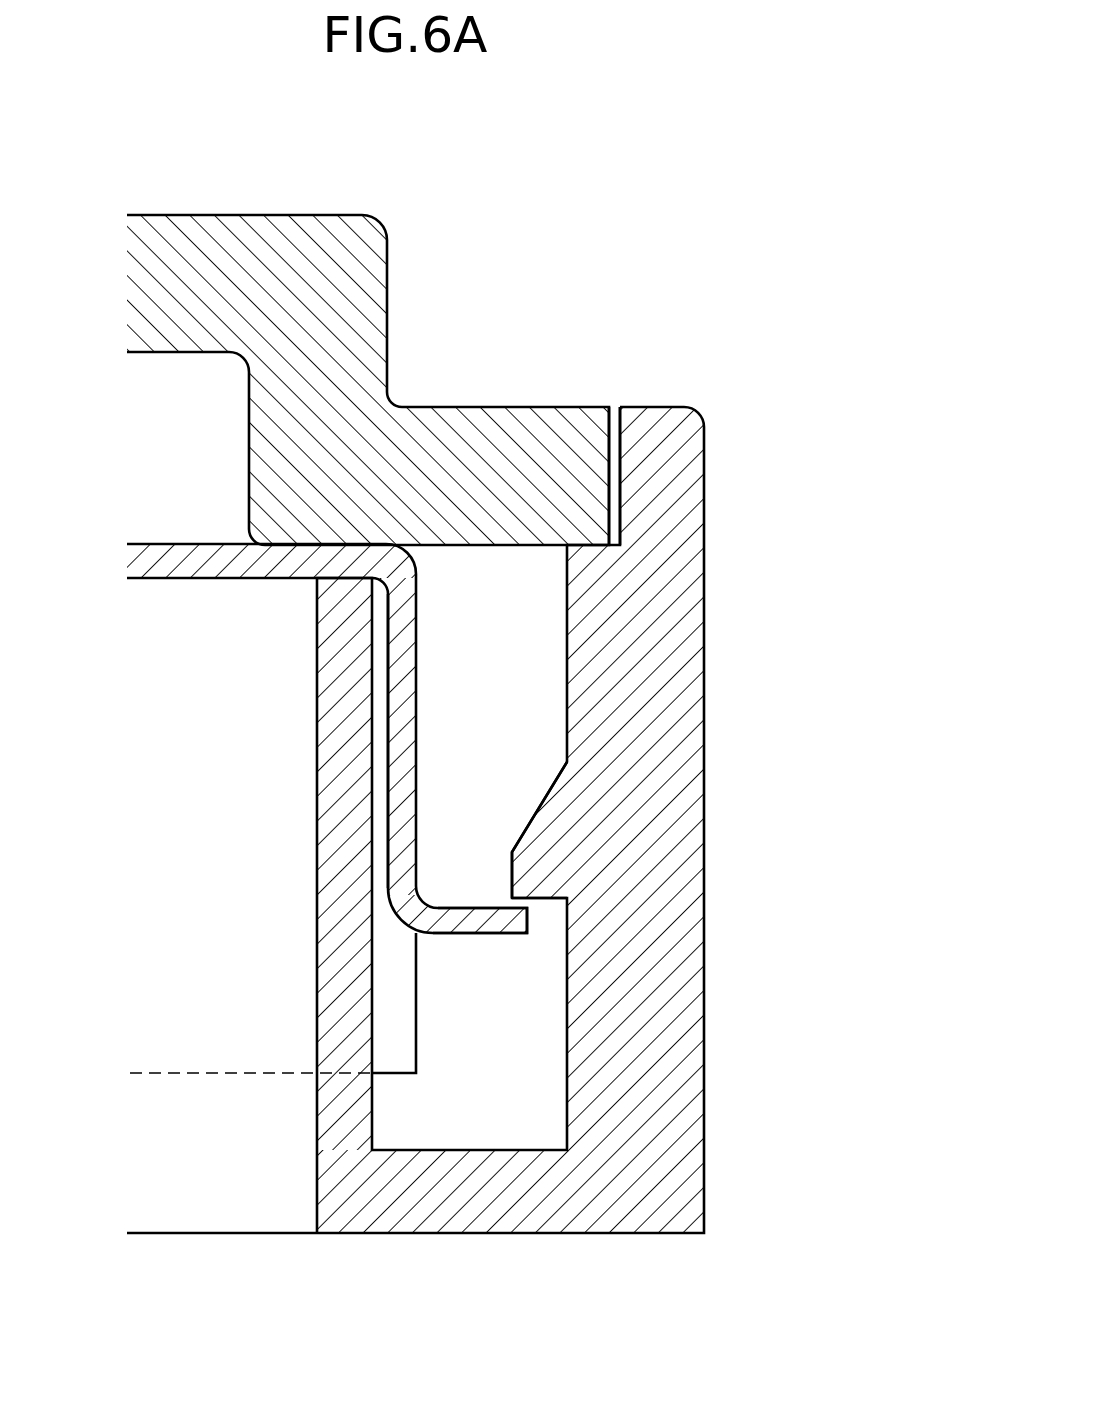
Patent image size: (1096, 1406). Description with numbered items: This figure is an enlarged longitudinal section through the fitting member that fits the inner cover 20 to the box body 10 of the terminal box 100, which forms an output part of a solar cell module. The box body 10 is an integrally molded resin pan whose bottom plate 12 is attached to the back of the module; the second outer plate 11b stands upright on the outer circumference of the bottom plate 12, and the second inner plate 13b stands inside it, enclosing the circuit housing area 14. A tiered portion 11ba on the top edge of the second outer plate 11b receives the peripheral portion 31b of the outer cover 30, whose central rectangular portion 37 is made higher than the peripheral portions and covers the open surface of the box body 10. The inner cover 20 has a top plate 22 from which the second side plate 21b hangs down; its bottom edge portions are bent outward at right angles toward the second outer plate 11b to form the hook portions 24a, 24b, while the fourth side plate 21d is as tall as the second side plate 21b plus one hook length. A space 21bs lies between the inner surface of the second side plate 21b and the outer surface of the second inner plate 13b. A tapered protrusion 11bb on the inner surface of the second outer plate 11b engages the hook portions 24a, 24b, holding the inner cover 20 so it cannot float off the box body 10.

The terminal box 100 is at (514, 170).
The outer cover 30 is at (322, 205).
The central rectangular portion 37 is at (183, 232).
The peripheral portion 31b is at (482, 425).
The tiered portion 11ba is at (568, 540).
The box body 10 is at (714, 488).
The second outer plate 11b is at (665, 580).
The bottom plate 12 is at (470, 1207).
The second inner plate 13b is at (345, 655).
The protrusion 11bb is at (533, 880).
The inner cover 20 is at (163, 536).
The top plate 22 is at (227, 552).
The second side plate 21b is at (400, 692).
The space 21bs is at (388, 750).
The hook portion 24a is at (512, 923).
The hook portion 24b is at (327, 738).
The fourth side plate 21d is at (403, 1012).
The circuit housing area 14 is at (186, 737).